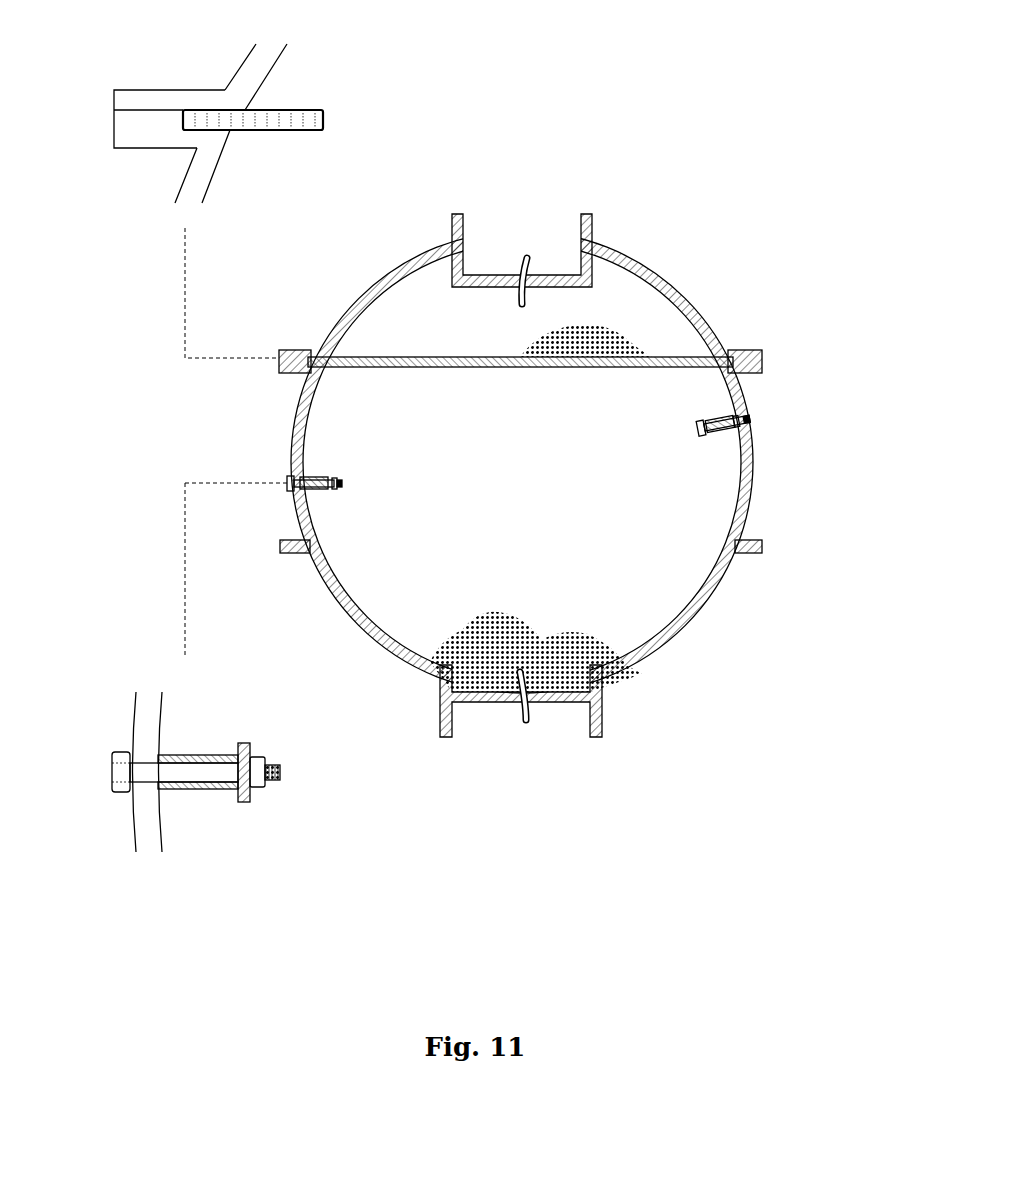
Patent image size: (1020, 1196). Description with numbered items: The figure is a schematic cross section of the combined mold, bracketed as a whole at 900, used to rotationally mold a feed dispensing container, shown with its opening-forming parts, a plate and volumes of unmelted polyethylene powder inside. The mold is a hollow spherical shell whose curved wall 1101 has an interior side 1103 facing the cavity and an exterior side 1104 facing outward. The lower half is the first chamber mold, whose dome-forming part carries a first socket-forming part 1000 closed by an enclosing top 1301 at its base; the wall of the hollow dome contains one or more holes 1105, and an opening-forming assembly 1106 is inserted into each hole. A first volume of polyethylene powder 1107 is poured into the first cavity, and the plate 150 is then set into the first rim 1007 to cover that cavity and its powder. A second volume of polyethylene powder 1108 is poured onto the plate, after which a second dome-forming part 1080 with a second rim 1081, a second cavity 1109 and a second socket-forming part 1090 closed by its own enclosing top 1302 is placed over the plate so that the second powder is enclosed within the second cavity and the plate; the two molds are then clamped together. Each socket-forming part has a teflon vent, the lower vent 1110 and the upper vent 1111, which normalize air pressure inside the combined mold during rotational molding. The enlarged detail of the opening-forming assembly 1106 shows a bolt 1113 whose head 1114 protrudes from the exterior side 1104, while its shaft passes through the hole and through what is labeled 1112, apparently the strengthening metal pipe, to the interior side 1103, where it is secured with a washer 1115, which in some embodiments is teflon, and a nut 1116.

The payload container assembly 900 is at (830, 735).
The spherical shell 1101 is at (674, 641).
The interior side 1103 is at (736, 507).
The exterior side 1104 is at (751, 507).
The hole 1105 is at (428, 398).
The second cavity 1109 is at (428, 322).
The first volume of polyethylene powder 1107 is at (508, 632).
The second volume of polyethylene powder 1108 is at (618, 336).
The second socket-forming part 1090 is at (588, 212).
The first socket-forming part 1000 is at (606, 708).
The enclosing top 1302 is at (495, 272).
The enclosing top 1301 is at (562, 704).
The teflon vent 1111 is at (524, 245).
The teflon vent 1110 is at (527, 732).
The first rim 1007 is at (766, 362).
The second dome-forming part 1080 is at (402, 266).
The second rim 1081 is at (288, 348).
The panel 150 is at (298, 108).
The opening-forming assembly 1106 is at (282, 685).
The sleeve 1112 is at (224, 792).
The bolt 1113 is at (283, 772).
The head 1114 is at (110, 772).
The washer 1115 is at (244, 741).
The nut 1116 is at (257, 744).